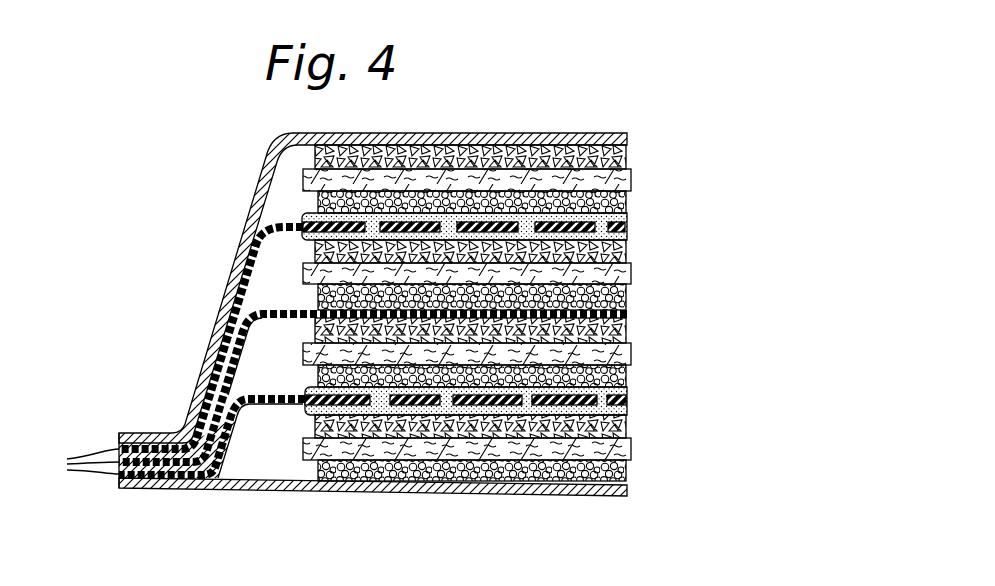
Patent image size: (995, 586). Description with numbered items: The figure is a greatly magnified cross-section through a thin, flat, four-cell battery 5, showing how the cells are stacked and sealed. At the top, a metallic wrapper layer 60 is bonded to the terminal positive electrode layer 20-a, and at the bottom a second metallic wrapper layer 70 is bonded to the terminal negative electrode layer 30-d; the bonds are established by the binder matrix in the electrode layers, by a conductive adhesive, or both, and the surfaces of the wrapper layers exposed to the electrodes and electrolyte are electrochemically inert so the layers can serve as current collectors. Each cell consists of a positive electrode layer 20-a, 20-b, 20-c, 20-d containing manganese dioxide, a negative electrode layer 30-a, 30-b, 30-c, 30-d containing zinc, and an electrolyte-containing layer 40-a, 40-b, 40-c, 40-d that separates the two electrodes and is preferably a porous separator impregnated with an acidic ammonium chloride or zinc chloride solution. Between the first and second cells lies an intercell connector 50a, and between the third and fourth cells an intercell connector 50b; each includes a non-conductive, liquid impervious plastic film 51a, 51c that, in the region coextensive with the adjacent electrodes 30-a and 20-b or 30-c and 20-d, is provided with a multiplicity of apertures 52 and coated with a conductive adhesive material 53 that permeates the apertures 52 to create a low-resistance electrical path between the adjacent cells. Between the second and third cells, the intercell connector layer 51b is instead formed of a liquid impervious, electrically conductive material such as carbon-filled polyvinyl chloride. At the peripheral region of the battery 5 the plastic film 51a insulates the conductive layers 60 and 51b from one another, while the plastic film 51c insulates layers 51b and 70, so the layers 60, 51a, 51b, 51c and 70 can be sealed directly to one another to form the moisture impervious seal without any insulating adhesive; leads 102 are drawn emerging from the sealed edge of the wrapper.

The multicell battery 5 is at (527, 303).
The positive electrode layer 20-a is at (627, 156).
The positive electrode layer 20-b is at (627, 252).
The positive electrode layer 20-c is at (627, 337).
The positive electrode layer 20-d is at (627, 427).
The negative electrode layer 30-a is at (627, 203).
The negative electrode layer 30-b is at (627, 299).
The negative electrode layer 30-c is at (627, 380).
The negative electrode layer 30-d is at (627, 478).
The electrolyte-containing layer 40-a is at (629, 178).
The electrolyte-containing layer 40-b is at (630, 275).
The electrolyte-containing layer 40-c is at (629, 358).
The electrolyte-containing layer 40-d is at (630, 452).
The intercell connector 50a is at (627, 217).
The intercell connector 50b is at (628, 392).
The plastic film 51a is at (282, 221).
The intercell connector layer 51b is at (281, 306).
The plastic film 51c is at (257, 391).
The apertures 52 is at (522, 222).
The conductive adhesive material 53 is at (577, 217).
The wrapper layer 60 is at (626, 137).
The wrapper layer 70 is at (627, 490).
The lead wires 102 is at (69, 464).